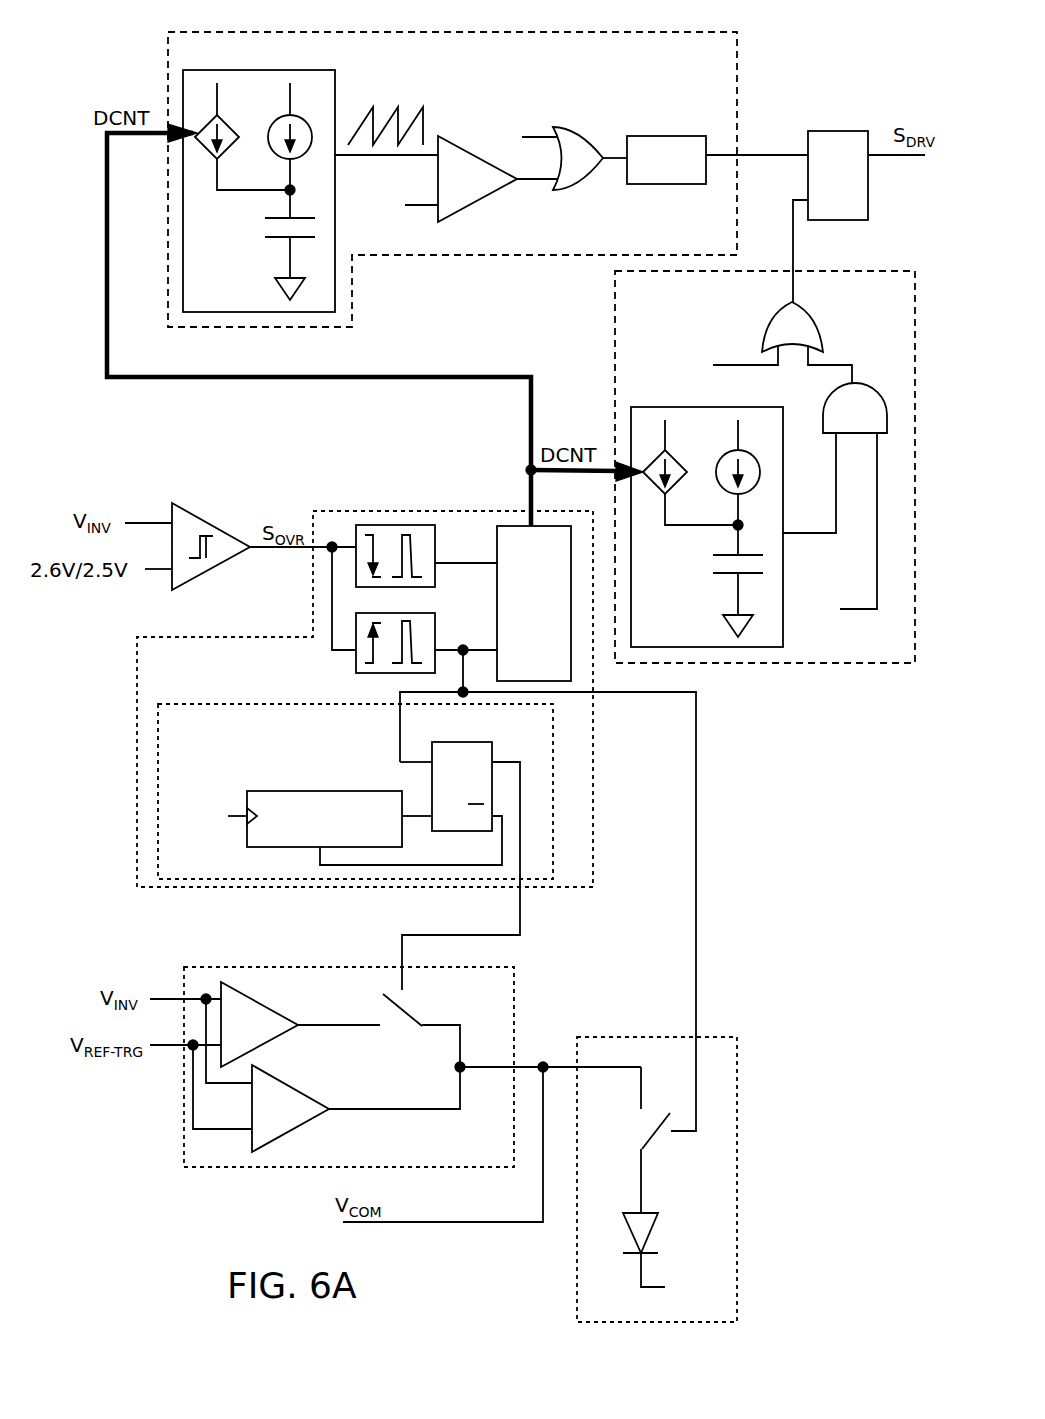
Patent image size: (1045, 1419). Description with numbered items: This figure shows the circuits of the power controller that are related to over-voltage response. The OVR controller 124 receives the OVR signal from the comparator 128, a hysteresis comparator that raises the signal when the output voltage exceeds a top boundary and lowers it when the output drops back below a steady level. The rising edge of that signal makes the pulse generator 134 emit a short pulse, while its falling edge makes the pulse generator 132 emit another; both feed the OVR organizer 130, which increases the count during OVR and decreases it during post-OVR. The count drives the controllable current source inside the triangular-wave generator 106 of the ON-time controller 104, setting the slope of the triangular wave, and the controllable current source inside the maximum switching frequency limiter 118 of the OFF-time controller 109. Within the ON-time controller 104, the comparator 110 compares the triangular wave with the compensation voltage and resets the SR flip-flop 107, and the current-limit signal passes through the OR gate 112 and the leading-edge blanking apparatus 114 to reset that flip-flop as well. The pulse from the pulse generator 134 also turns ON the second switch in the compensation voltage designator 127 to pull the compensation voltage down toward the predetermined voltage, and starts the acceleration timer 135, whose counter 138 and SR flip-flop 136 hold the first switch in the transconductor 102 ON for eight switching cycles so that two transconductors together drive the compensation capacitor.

The transconductor 102 is at (303, 967).
The ON-time controller 104 is at (425, 32).
The triangular-wave generator 106 is at (215, 70).
The SR flip-flop 107 is at (833, 131).
The OFF-time controller 109 is at (845, 272).
The comparator 110 is at (474, 203).
The OR gate 112 is at (582, 128).
The leading-edge blanking apparatus 114 is at (660, 136).
The maximum switching frequency limiter 118 is at (668, 407).
The OVR controller 124 is at (392, 511).
The compensation voltage designator 127 is at (648, 1037).
The comparator 128 is at (208, 523).
The OVR organizer 130 is at (517, 618).
The pulse generator 132 is at (436, 552).
The pulse generator 134 is at (436, 637).
The acceleration timer 135 is at (245, 704).
The SR flip-flop 136 is at (455, 742).
The counter 138 is at (313, 791).